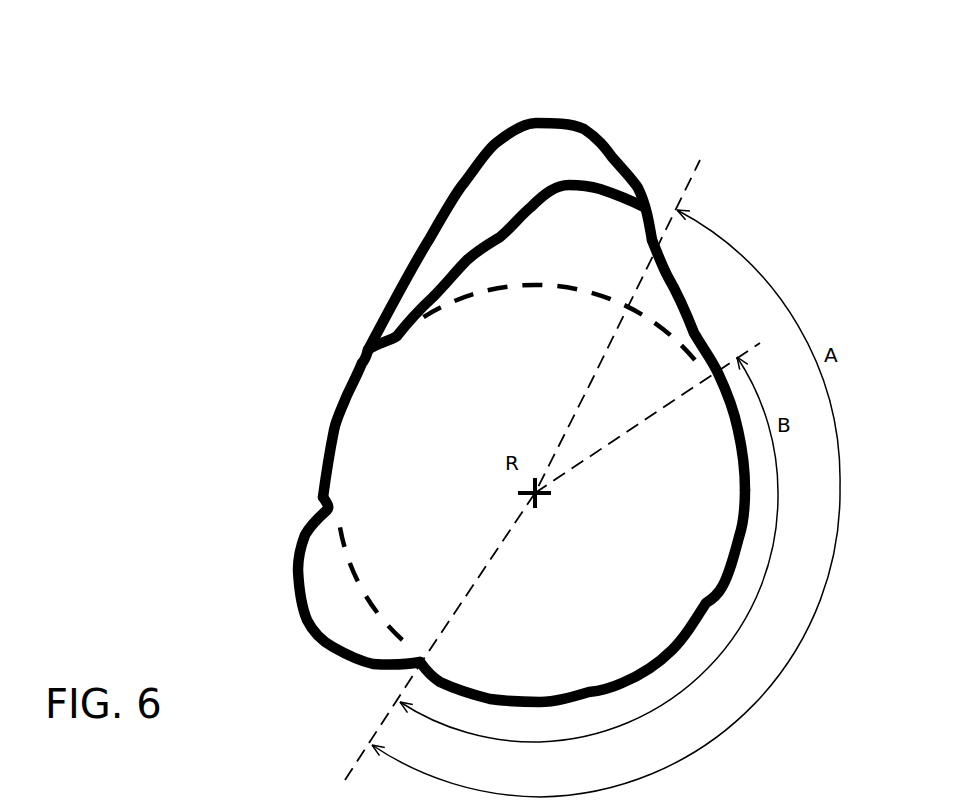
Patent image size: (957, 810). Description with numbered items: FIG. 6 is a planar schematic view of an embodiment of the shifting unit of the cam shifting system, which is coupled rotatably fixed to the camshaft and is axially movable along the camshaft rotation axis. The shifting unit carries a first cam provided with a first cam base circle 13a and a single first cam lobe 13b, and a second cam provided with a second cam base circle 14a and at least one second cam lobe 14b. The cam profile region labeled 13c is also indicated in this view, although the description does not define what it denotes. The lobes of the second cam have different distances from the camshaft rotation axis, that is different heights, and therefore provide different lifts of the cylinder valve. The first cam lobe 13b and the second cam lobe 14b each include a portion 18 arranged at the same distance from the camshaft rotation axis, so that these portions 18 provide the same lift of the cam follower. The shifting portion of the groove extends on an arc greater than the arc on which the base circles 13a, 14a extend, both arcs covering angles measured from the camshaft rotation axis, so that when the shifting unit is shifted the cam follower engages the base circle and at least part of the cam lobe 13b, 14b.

The first cam base circle 13a is at (356, 569).
The first cam lobe 13b is at (543, 118).
The third lobe portion 13c is at (300, 567).
The second cam base circle 14a is at (713, 612).
The second cam lobe 14b is at (457, 247).
The portion of the cam lobes 18 is at (678, 280).